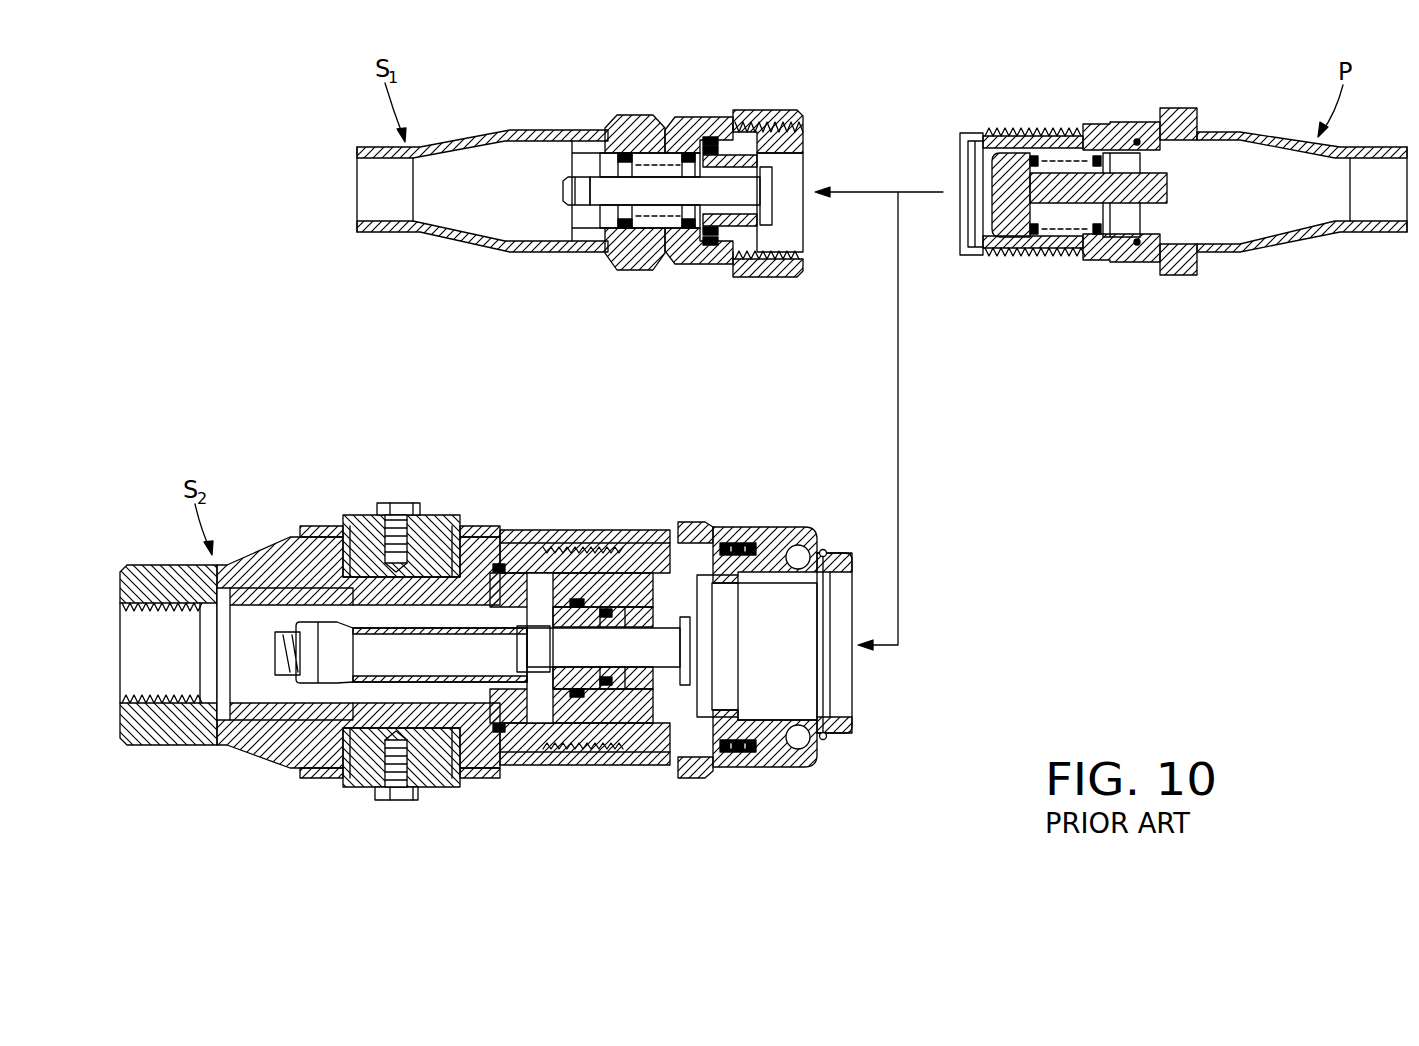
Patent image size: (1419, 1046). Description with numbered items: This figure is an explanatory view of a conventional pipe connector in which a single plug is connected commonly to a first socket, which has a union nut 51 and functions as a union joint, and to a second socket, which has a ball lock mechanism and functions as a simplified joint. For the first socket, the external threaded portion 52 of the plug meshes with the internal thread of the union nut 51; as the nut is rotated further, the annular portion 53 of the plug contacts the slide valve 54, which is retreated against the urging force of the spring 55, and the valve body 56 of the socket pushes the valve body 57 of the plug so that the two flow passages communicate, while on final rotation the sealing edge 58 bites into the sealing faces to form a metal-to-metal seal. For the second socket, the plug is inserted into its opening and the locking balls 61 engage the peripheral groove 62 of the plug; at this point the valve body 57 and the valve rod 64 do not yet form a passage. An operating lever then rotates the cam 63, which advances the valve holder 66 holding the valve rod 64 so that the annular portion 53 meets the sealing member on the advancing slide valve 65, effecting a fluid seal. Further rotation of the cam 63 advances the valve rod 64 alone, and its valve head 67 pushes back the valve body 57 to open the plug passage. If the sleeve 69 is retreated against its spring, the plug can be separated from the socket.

The union nut 51 is at (762, 266).
The external threaded portion 52 is at (1030, 131).
The annular portion 53 is at (983, 210).
The slide valve 54 is at (777, 157).
The spring 55 is at (620, 252).
The valve body 56 is at (650, 193).
The valve body 57 is at (1053, 200).
The sealing edge 58 is at (715, 255).
The locking balls 61 is at (798, 545).
The peripheral groove 62 is at (1097, 128).
The cam 63 is at (430, 534).
The valve rod 64 is at (571, 650).
The slide valve 65 is at (637, 697).
The valve holder 66 is at (434, 708).
The valve head 67 is at (683, 636).
The sleeve 69 is at (773, 768).